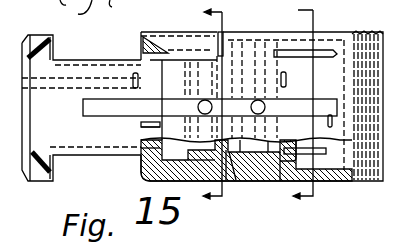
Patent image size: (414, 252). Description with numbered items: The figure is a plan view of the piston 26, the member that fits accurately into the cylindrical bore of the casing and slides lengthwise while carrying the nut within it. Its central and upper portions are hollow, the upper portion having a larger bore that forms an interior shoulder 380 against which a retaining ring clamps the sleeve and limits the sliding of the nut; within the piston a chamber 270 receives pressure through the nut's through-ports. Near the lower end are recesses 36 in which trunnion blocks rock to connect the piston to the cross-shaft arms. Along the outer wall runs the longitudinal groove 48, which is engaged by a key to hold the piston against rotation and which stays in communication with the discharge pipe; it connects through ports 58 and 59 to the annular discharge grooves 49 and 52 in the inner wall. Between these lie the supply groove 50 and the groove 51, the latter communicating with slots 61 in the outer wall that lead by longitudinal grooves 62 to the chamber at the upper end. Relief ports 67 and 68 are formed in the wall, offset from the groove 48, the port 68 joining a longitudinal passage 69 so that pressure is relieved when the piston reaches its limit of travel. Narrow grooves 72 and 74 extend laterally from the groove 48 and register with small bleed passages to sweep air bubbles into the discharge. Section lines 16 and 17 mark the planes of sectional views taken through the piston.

The section line 16- 16 is at (204, 105).
The section line 17- 17 is at (306, 106).
The piston 26 is at (269, 40).
The recesses 36 is at (70, 52).
The longitudinal groove 48 is at (210, 109).
The annular groove 49 is at (268, 141).
The annular groove 50 is at (229, 168).
The annular groove 51 is at (226, 160).
The annular groove 52 is at (195, 174).
The port 58 is at (265, 107).
The port 59 is at (198, 107).
The slots 61 is at (224, 34).
The longitudinal grooves 62 is at (164, 36).
The port 67 is at (287, 80).
The port 68 is at (132, 80).
The longitudinal passage 69 is at (68, 88).
The narrow groove 72 is at (329, 121).
The narrow groove 74 is at (145, 124).
The chamber 270 is at (147, 150).
The interior shoulder 380 is at (282, 176).